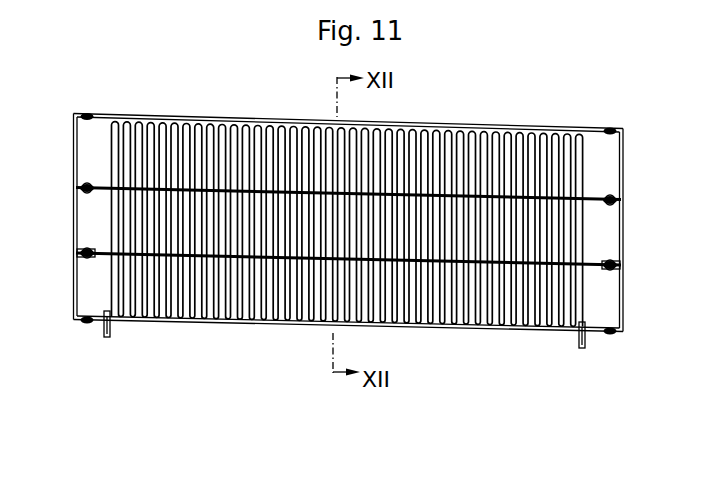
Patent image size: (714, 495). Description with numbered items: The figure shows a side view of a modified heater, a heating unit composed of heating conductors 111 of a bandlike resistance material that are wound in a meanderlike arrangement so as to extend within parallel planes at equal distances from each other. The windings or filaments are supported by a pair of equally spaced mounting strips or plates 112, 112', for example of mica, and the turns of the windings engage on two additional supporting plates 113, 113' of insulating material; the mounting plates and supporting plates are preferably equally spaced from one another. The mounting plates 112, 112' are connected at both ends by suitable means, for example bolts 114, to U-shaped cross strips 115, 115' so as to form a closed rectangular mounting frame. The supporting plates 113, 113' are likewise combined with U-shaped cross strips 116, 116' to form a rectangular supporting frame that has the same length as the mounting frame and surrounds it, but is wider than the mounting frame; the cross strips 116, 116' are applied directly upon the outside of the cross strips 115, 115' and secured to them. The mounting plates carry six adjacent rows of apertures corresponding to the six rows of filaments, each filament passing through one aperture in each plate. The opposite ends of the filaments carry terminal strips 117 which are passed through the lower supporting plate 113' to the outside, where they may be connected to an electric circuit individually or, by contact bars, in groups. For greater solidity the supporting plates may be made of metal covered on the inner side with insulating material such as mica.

The heating conductor 111 is at (450, 303).
The mounting strip 112 is at (324, 179).
The mounting strip 112' is at (329, 272).
The supporting plate 113 is at (349, 106).
The supporting plate 113' is at (349, 349).
The bolt 114 is at (85, 194).
The U-shaped cross strip 115 is at (62, 255).
The U-shaped cross strip 115' is at (635, 273).
The U-shaped cross strip 116 is at (50, 217).
The U-shaped cross strip 116' is at (646, 230).
The terminal strip 117 is at (106, 337).